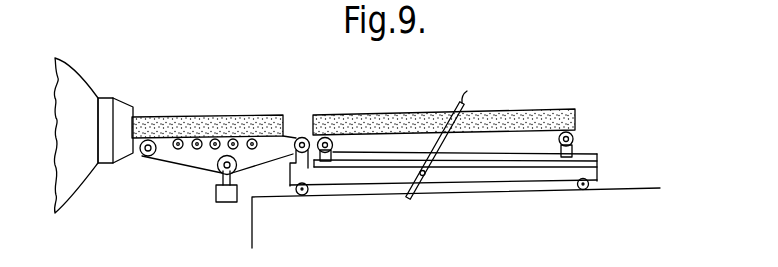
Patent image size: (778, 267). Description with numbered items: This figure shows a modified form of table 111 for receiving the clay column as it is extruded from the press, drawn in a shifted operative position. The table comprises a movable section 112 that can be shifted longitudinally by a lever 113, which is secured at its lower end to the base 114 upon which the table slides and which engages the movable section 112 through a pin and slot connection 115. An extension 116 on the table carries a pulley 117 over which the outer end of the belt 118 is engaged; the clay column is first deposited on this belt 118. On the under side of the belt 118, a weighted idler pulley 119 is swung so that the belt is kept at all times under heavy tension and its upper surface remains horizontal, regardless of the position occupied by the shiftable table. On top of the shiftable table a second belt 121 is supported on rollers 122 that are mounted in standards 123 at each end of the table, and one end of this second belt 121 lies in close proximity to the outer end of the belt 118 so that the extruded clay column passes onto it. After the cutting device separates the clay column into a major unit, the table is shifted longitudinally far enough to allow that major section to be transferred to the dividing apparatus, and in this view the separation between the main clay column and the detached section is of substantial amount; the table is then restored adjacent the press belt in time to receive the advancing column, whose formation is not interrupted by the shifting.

The table 111 is at (534, 109).
The movable section 112 is at (557, 173).
The lever 113 is at (473, 93).
The base 114 is at (378, 196).
The pin and slot connection 115 is at (421, 183).
The extension 116 is at (300, 156).
The pulley 117 is at (302, 137).
The belt 118 is at (290, 136).
The weighted idler pulley 119 is at (216, 200).
The second belt 121 is at (361, 158).
The rollers 122 is at (331, 139).
The standards 123 is at (328, 158).